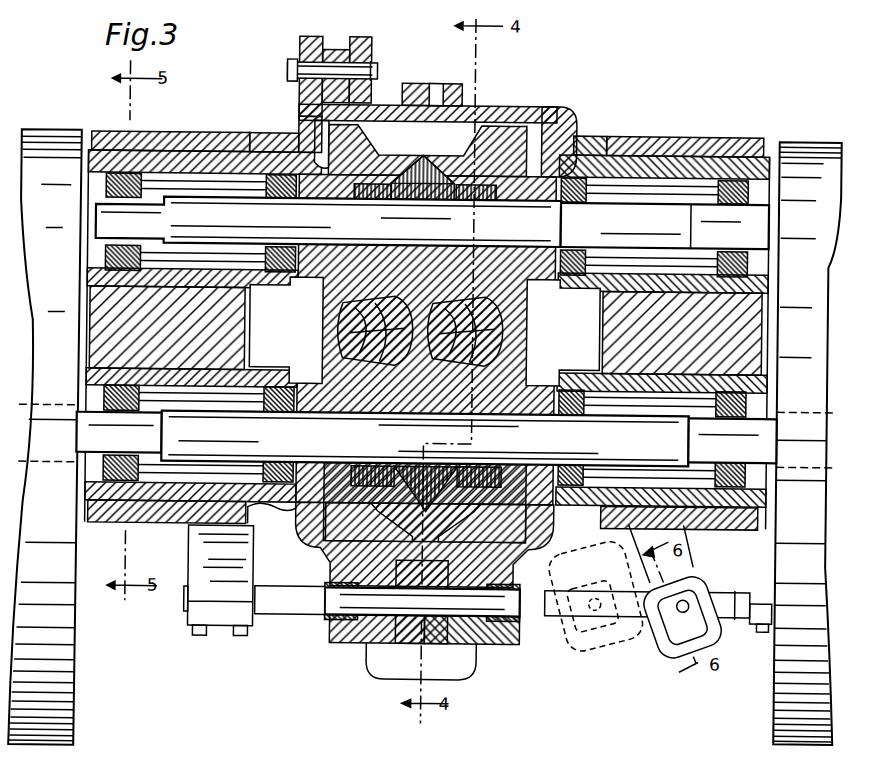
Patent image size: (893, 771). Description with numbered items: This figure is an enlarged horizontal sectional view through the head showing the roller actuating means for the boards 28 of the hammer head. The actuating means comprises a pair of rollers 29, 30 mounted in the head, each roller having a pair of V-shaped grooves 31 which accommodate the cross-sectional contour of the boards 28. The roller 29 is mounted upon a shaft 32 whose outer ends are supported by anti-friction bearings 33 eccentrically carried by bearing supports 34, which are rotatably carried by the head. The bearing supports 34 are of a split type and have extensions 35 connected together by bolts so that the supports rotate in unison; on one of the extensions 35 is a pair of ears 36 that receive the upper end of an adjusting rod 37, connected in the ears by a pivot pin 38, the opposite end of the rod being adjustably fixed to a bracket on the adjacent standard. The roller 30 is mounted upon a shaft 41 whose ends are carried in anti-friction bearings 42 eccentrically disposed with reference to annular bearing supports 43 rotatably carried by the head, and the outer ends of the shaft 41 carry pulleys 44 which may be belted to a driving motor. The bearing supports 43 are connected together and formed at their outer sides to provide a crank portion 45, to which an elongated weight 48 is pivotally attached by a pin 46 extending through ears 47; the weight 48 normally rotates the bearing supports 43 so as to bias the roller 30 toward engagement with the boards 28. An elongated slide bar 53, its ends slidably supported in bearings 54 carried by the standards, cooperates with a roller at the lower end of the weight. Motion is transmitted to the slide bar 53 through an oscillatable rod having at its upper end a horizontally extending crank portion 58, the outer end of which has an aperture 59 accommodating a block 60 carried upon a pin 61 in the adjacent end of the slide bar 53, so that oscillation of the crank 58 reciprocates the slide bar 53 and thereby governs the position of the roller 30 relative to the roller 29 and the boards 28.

The boards 28 is at (343, 327).
The roller 29 is at (523, 120).
The roller 30 is at (295, 540).
The V-shaped grooves 31 is at (462, 152).
The shaft 32 is at (432, 222).
The anti-friction bearings 33 is at (118, 172).
The bearing supports 34 is at (180, 148).
The extensions 35 is at (385, 104).
The ears 36 is at (306, 34).
The adjusting rod 37 is at (336, 50).
The pivot pin 38 is at (288, 68).
The shaft 41 is at (382, 438).
The anti-friction bearings 42 is at (748, 456).
The annular bearing supports 43 is at (172, 522).
The pulleys 44 is at (425, 441).
The crank portion 45 is at (318, 552).
The pin 46 is at (476, 630).
The ears 47 is at (333, 620).
The elongated weight 48 is at (410, 632).
The slide bar 53 is at (280, 612).
The bearings 54 is at (198, 588).
The crank portion 58 is at (692, 558).
The aperture 59 is at (666, 630).
The block 60 is at (648, 620).
The pin 61 is at (684, 603).